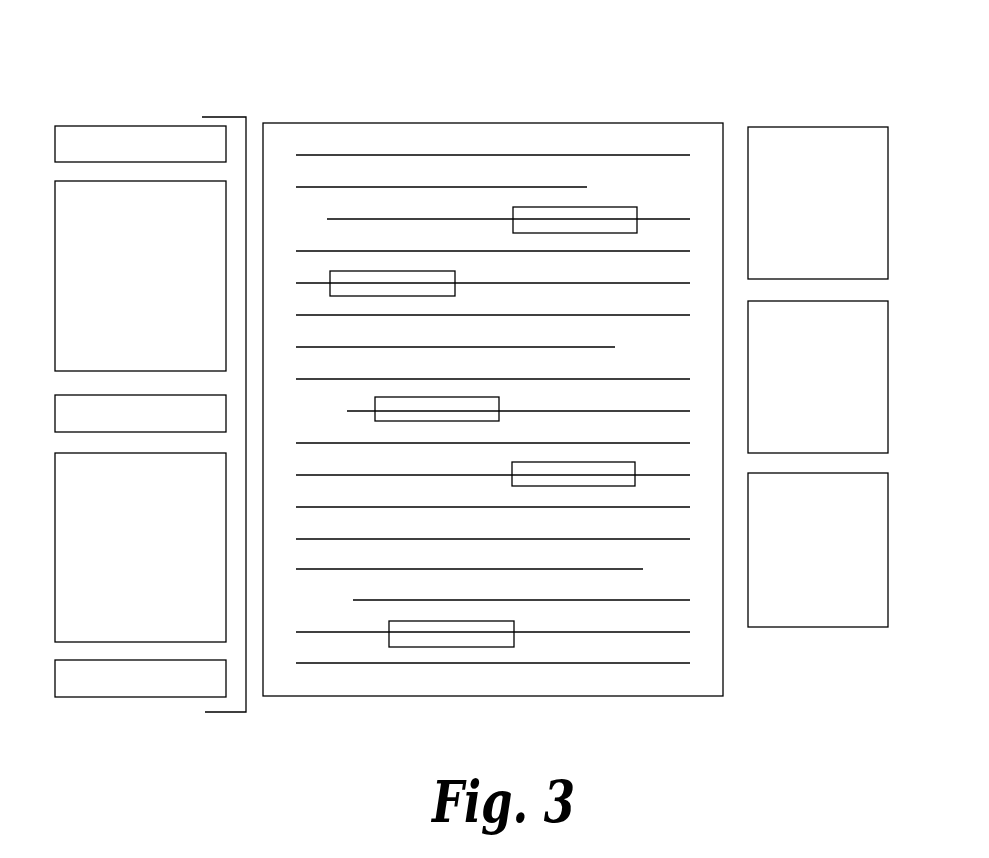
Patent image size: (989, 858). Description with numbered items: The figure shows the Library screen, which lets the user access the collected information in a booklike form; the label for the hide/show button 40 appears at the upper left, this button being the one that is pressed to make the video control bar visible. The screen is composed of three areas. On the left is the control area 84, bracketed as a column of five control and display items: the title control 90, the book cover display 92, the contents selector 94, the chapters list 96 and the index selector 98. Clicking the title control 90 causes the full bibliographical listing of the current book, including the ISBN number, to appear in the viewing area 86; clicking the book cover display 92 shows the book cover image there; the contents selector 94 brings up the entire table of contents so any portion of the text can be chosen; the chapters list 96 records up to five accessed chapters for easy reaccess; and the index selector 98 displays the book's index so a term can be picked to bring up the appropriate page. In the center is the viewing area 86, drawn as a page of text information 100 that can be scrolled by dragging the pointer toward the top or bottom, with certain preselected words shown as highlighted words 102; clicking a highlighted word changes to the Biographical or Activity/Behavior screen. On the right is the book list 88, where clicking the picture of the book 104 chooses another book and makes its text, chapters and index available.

The hide/show button 40 is at (112, 59).
The control area 84 is at (246, 410).
The viewing area 86 is at (542, 407).
The book list 88 is at (804, 350).
The title control 90 is at (165, 125).
The book cover display 92 is at (72, 312).
The contents selector 94 is at (62, 422).
The chapters list 96 is at (72, 527).
The index selector 98 is at (70, 687).
The text information 100 is at (533, 187).
The highlighted words 102 is at (352, 288).
The picture of the book 104 is at (851, 143).